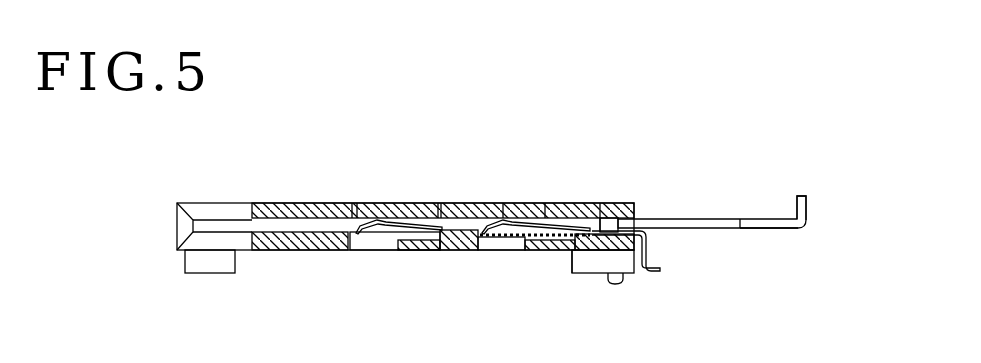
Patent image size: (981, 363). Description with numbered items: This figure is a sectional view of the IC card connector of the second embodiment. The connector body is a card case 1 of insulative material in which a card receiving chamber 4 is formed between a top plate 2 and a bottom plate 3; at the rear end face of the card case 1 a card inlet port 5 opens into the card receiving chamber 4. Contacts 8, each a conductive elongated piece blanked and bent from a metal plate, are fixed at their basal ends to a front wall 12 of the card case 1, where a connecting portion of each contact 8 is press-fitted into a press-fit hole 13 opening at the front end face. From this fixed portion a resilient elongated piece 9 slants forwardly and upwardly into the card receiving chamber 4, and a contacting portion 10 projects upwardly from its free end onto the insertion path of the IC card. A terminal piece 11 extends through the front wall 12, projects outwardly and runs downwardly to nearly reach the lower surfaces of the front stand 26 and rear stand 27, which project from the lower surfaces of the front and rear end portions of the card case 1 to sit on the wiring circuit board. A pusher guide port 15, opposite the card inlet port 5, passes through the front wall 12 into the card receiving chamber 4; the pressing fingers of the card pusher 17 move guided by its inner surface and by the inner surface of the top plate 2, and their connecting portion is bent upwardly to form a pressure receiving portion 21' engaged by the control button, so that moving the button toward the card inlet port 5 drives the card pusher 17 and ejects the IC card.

The card case 1 is at (276, 204).
The top plate 2 is at (314, 204).
The bottom plate 3 is at (305, 250).
The card receiving chamber 4 is at (435, 204).
The card inlet port 5 is at (177, 222).
The contact 8 is at (357, 204).
The resilient elongated piece 9 is at (546, 204).
The contacting portion 10 is at (507, 204).
The terminal piece 11 is at (657, 262).
The front wall 12 is at (626, 276).
The press-fit hole 13 is at (607, 256).
The pusher guide port 15 is at (605, 204).
The card pusher 17 is at (766, 229).
The pressure receiving portion 21' is at (773, 185).
The front stand 26 is at (572, 262).
The rear stand 27 is at (218, 273).